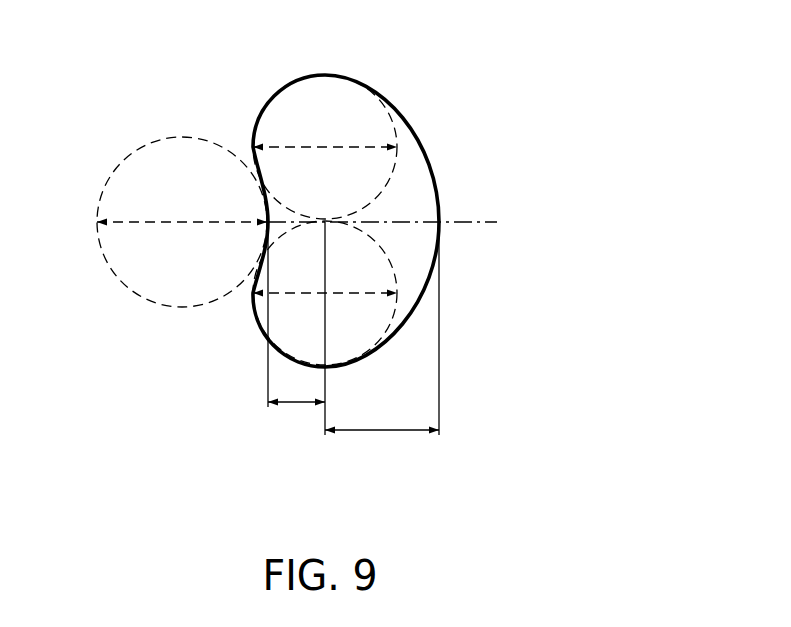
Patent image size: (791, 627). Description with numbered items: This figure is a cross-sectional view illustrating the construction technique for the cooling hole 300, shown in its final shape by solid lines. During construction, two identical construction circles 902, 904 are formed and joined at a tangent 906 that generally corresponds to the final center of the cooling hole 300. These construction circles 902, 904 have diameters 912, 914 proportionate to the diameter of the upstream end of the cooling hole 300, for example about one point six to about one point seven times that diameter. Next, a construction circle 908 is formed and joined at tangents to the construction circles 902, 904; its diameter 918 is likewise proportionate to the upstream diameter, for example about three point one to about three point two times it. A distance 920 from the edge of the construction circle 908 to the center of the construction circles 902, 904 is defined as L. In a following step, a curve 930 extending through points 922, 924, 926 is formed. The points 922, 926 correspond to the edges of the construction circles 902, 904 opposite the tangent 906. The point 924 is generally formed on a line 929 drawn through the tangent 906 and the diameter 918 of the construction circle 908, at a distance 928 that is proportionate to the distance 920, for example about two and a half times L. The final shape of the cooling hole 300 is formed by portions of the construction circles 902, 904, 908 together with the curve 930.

The cooling hole 300 is at (517, 82).
The construction circle 902 is at (277, 93).
The construction circle 904 is at (253, 303).
The tangent 906 is at (325, 222).
The construction circle 908 is at (157, 138).
The diameter 912 is at (325, 147).
The diameter 914 is at (342, 293).
The diameter 918 is at (182, 222).
The distance 920 is at (297, 403).
The point 922 is at (325, 75).
The point 924 is at (439, 222).
The point 926 is at (327, 368).
The distance 928 is at (387, 431).
The line 929 is at (478, 223).
The curve 930 is at (425, 157).